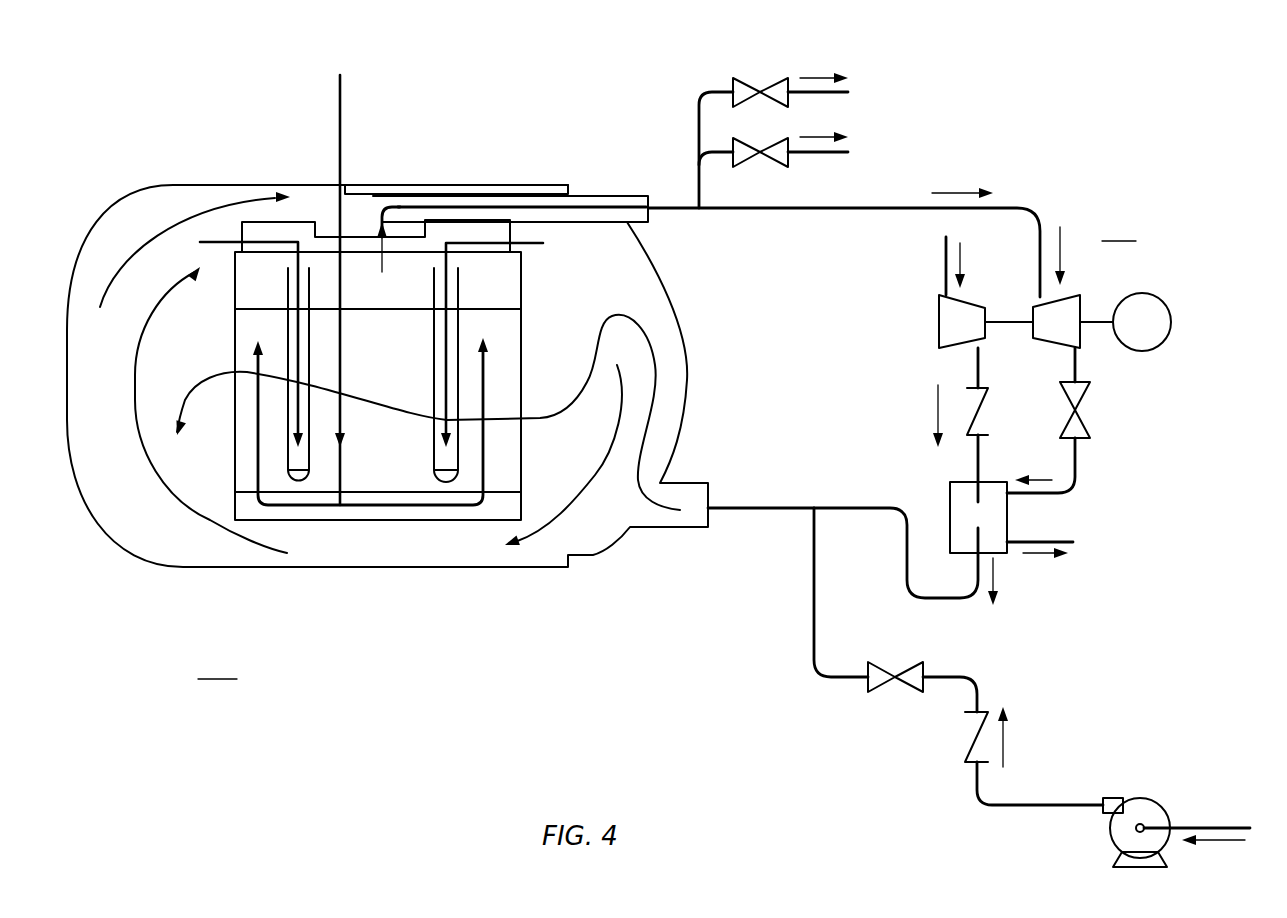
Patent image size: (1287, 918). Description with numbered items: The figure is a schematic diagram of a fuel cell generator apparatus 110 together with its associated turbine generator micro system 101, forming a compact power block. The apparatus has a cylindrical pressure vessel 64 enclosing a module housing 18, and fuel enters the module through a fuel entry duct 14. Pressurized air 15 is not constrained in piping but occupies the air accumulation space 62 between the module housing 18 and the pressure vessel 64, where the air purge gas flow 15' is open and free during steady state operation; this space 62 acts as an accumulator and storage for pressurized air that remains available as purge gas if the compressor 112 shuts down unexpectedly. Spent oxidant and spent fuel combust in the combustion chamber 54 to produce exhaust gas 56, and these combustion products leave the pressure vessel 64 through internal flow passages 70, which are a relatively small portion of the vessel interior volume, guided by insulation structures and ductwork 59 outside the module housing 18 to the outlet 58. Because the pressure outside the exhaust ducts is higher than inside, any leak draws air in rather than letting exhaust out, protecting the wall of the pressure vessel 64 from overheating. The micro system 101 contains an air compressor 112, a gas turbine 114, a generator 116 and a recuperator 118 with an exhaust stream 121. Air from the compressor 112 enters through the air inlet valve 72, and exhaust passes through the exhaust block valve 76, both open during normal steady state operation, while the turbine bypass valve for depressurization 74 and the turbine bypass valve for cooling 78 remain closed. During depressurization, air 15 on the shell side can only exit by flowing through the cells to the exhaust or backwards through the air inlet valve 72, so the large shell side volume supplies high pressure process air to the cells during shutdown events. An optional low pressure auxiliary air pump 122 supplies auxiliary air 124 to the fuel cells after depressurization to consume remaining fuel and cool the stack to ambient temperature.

The fuel entry duct 14 is at (337, 93).
The air 15 is at (853, 421).
The air purge gas flow 15' is at (382, 351).
The module housing 18 is at (435, 523).
The combustion chamber 54 is at (502, 280).
The exhaust gas 56 is at (913, 208).
The outlet 58 is at (523, 194).
The insulation structures and ductwork 59 is at (615, 196).
The air accumulation space 62 is at (127, 490).
The pressure vessel 64 is at (475, 185).
The internal flow passages 70 is at (366, 220).
The air inlet valve 72 is at (982, 408).
The turbine bypass valve for depressurization 74 is at (743, 167).
The exhaust block valve 76 is at (1090, 430).
The turbine bypass valve for cooling 78 is at (775, 83).
The micro system 101 is at (1127, 228).
The fuel cell generator apparatus 110 is at (223, 666).
The air compressor 112 is at (938, 328).
The gas turbine 114 is at (1080, 343).
The generator 116 is at (1175, 330).
The recuperator 118 is at (995, 543).
The exhaust stream 121 is at (1047, 540).
The auxiliary air pump 122 is at (1118, 797).
The auxiliary air 124 is at (845, 680).